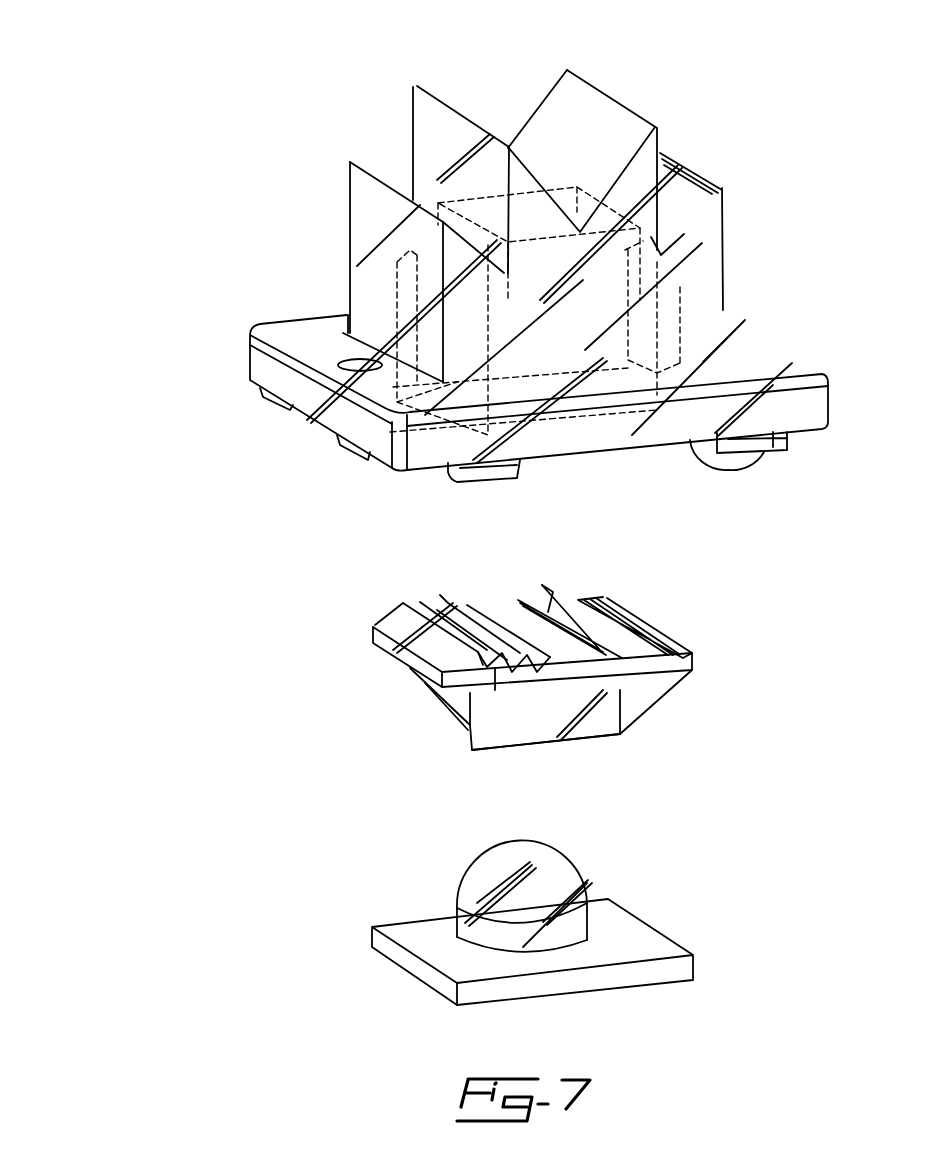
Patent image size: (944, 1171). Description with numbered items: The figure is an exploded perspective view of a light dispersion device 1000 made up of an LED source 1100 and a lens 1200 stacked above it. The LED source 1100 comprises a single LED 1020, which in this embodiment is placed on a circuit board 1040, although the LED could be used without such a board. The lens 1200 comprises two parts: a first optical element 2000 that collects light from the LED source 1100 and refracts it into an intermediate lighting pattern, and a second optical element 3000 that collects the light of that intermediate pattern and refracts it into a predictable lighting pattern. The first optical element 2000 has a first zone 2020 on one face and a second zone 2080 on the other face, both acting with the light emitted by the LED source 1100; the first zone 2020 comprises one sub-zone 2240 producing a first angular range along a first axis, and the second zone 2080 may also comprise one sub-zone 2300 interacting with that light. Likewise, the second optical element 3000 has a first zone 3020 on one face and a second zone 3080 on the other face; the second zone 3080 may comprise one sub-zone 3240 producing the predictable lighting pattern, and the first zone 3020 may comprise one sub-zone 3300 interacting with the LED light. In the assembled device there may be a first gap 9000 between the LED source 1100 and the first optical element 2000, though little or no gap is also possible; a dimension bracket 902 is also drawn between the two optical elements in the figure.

The light dispersion device 1000 is at (122, 1018).
The lens 1200 is at (212, 830).
The spacing between optic and holder 902 is at (318, 452).
The first gap 9000 is at (748, 680).
The second optical element 3000 is at (280, 265).
The second zone 3080 is at (568, 203).
The sub-zone 3240 is at (613, 97).
The first zone 3020 is at (750, 472).
The sub-zone 3300 is at (826, 456).
The first optical element 2000 is at (313, 668).
The sub-zone 2240 is at (613, 576).
The second zone 2080 is at (650, 632).
The first zone 2020 is at (627, 717).
The sub-zone 2300 is at (698, 744).
The LED source 1100 is at (345, 890).
The single LED 1020 is at (475, 880).
The circuit board 1040 is at (423, 985).